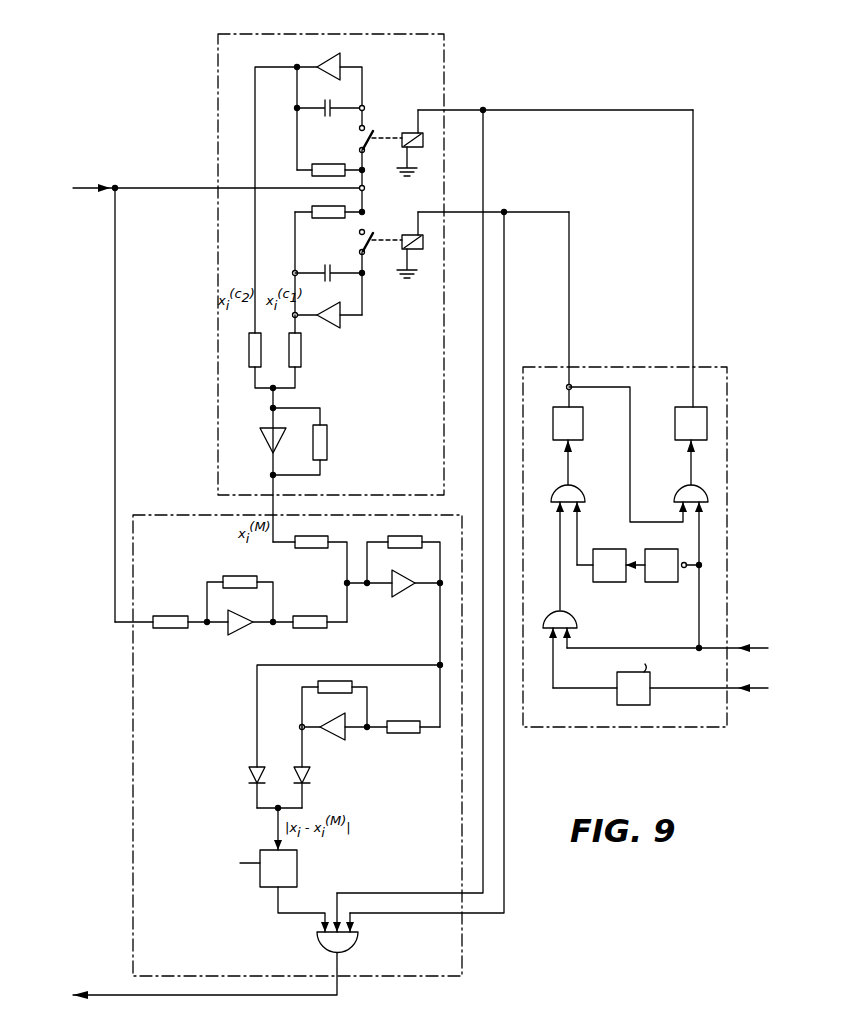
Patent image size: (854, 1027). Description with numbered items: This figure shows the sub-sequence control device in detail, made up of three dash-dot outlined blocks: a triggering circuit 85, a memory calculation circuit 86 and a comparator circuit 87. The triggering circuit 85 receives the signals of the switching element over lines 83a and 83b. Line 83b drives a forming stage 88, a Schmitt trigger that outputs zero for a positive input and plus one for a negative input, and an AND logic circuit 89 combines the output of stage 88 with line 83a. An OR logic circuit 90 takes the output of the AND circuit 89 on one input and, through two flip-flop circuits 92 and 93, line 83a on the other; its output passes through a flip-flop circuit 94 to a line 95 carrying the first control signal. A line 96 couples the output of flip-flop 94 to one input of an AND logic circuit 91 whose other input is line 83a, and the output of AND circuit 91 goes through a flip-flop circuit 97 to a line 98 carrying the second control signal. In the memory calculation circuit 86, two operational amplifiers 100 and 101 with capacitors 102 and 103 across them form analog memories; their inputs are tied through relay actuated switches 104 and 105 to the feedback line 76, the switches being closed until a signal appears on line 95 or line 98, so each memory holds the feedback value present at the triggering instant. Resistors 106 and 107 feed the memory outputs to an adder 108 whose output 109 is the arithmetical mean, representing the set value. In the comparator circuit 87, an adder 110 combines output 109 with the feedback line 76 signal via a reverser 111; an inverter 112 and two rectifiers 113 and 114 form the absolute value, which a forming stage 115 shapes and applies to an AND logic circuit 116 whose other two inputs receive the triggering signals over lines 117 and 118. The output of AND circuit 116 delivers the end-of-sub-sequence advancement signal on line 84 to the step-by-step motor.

The feedback line 76 is at (84, 197).
The line 84 is at (105, 993).
The line 83a is at (752, 648).
The line 83b is at (754, 692).
The triggering circuit 85 is at (650, 728).
The memory calculation circuit 86 is at (446, 52).
The comparator circuit 87 is at (463, 960).
The forming stage 88 is at (660, 680).
The AND logic circuit 89 is at (578, 621).
The OR logic circuit 90 is at (578, 492).
The AND logic circuit 91 is at (672, 492).
The flip-flop circuit 92 is at (664, 565).
The flip-flop circuit 93 is at (601, 565).
The flip-flop circuit 94 is at (580, 407).
The line 95 is at (570, 268).
The line 96 is at (631, 437).
The flip-flop circuit 97 is at (685, 407).
The line 98 is at (692, 222).
The operational amplifier 100 is at (341, 323).
The operational amplifier 101 is at (341, 56).
The capacitor 102 is at (327, 264).
The capacitor 103 is at (327, 120).
The relay actuated switch 104 is at (384, 240).
The relay actuated switch 105 is at (384, 135).
The resistor 106 is at (302, 355).
The resistor 107 is at (250, 345).
The adder 108 is at (262, 440).
The output 109 is at (270, 504).
The adder 110 is at (401, 598).
The reverser 111 is at (240, 633).
The inverter 112 is at (345, 735).
The rectifier 113 is at (248, 775).
The rectifier 114 is at (312, 776).
The forming stage 115 is at (244, 870).
The AND logic circuit 116 is at (317, 944).
The line 117 is at (504, 762).
The line 118 is at (483, 793).